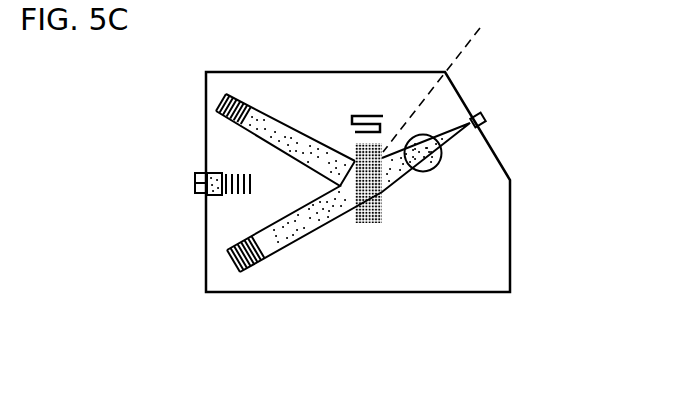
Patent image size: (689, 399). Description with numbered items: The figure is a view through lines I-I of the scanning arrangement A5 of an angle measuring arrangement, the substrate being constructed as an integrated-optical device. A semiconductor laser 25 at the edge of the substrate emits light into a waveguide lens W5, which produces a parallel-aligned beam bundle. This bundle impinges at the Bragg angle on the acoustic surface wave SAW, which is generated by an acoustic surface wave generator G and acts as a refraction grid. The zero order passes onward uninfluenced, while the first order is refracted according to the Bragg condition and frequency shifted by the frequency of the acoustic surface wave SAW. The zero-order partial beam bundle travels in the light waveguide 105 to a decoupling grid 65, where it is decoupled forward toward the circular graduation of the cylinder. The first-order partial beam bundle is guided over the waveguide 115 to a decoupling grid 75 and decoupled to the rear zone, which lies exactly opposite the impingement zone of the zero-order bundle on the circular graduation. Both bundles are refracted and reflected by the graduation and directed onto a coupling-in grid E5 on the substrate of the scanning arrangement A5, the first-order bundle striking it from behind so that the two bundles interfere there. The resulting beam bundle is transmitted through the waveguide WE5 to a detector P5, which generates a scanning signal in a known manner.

The scanning arrangement A5 is at (496, 250).
The waveguide 115 is at (302, 150).
The decoupling grid 75 is at (222, 92).
The light waveguide 105 is at (297, 227).
The decoupling grid 65 is at (235, 274).
The waveguide lens W5 is at (441, 168).
The semiconductor laser 25 is at (488, 124).
The acoustic surface wave generator G is at (369, 113).
The acoustic surface wave SAW is at (457, 81).
The section lines I—I I-I is at (288, 37).
The detector P5 is at (196, 178).
The coupling-in grid E5 is at (223, 196).
The waveguide WE5 is at (205, 171).